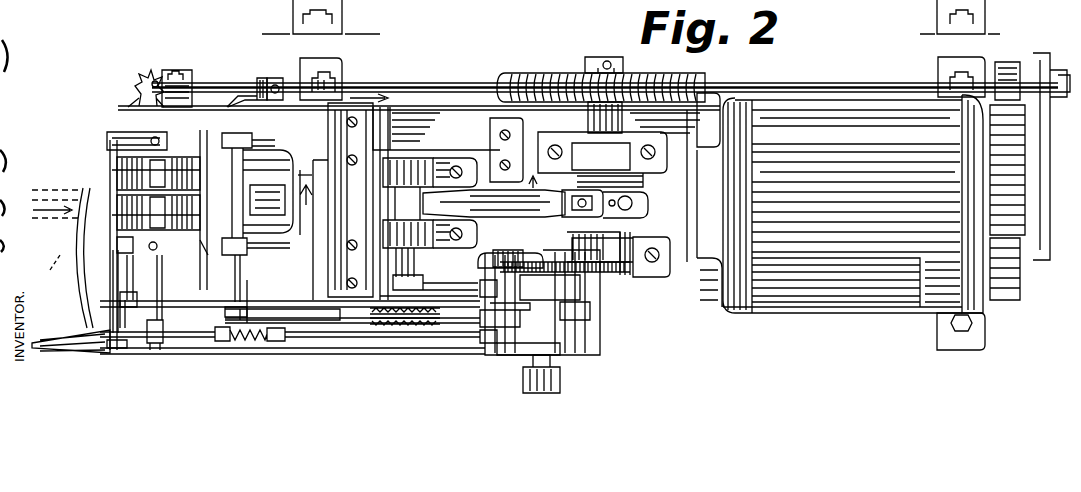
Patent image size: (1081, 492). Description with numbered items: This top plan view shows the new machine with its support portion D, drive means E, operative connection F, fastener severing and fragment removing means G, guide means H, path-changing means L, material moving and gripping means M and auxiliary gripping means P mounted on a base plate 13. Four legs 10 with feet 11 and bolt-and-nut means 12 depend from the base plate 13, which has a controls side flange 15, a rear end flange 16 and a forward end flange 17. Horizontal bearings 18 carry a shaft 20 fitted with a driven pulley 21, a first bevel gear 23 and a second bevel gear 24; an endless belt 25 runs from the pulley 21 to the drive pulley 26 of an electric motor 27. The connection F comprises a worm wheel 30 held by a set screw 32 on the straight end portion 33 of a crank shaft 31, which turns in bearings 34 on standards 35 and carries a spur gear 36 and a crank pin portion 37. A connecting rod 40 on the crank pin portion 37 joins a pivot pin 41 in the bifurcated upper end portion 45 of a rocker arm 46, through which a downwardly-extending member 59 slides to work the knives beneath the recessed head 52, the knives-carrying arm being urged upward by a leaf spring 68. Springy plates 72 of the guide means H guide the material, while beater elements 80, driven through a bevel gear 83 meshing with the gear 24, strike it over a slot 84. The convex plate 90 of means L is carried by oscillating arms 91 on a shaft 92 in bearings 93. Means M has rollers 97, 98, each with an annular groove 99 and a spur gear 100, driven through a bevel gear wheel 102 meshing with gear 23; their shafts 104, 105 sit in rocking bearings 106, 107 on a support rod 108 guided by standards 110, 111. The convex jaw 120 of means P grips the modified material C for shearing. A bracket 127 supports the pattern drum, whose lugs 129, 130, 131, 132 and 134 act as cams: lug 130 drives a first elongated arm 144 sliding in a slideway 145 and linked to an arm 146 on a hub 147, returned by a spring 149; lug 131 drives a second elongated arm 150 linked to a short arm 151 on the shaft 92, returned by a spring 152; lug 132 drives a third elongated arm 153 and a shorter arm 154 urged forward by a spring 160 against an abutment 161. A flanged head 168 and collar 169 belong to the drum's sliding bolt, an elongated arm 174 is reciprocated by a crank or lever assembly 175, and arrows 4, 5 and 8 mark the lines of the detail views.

The arrow indicating direction 4 is at (538, 184).
The arrow indicating direction 5 is at (297, 202).
The arrow indicating direction 8 is at (376, 104).
The legs 10 is at (340, 72).
The feet 11 is at (348, 30).
The carrying means 12 is at (303, 18).
The base plate 13 is at (428, 110).
The controls side flange 15 is at (106, 216).
The rear end flange 16 is at (1027, 292).
The forward end flange 17 is at (118, 142).
The horizontal bearings 18 is at (176, 70).
The shaft 20 is at (815, 78).
The driven pulley 21 is at (975, 118).
The first bevel gear 23 is at (148, 75).
The second bevel gear 24 is at (287, 78).
The endless belt 25 is at (1005, 125).
The drive pulley 26 is at (1000, 160).
The electric motor 27 is at (840, 313).
The worm wheel 30 is at (524, 73).
The crank shaft 31 is at (615, 58).
The set screw 32 is at (585, 65).
The straight end portion 33 is at (597, 57).
The bearings 34 is at (585, 145).
The standards 35 is at (670, 270).
The spur gear 36 is at (615, 300).
The crank pin portion 37 is at (692, 150).
The connecting rod 40 is at (650, 200).
The pivot pin 41 is at (580, 222).
The bifurcated upper end portion 45 is at (422, 172).
The rocker arm 46 is at (480, 190).
The recessed head 52 is at (332, 205).
The downwardly-extending member 59 is at (490, 212).
The means to urge arm upwardly 68 is at (490, 145).
The plate 72 is at (362, 112).
The beater elements 80 is at (288, 218).
The bevel gear 83 is at (255, 76).
The slot 84 is at (285, 158).
The convex plate 90 is at (210, 276).
The oscillating arms 91 is at (248, 133).
The shaft 92 is at (245, 270).
The bearings 93 is at (258, 140).
The roller 97 is at (115, 222).
The roller 98 is at (200, 232).
The annular groove 99 is at (125, 185).
The spur gear 100 is at (128, 150).
The bevel gear wheel 102 is at (138, 95).
The shaft 104 is at (120, 175).
The shaft 105 is at (120, 165).
The bearing 106 is at (115, 254).
The bearing 107 is at (120, 158).
The support rod 108 is at (160, 266).
The standard 110 is at (113, 262).
The standard 111 is at (120, 150).
The jaw 120 is at (84, 200).
The bracket 127 is at (565, 389).
The lug 129 is at (590, 320).
The lug 130 is at (520, 280).
The lug 131 is at (576, 356).
The lug 132 is at (495, 357).
The pin 134 is at (596, 345).
The first elongated arm 144 is at (300, 300).
The slideway 145 is at (470, 305).
The upwardly-extending arm 146 is at (118, 305).
The hub 147 is at (290, 314).
The retraction spiral spring 149 is at (480, 280).
The second elongated arm 150 is at (345, 335).
The short arm 151 is at (258, 268).
The retraction coil spring 152 is at (400, 335).
The third elongated arm 153 is at (370, 330).
The shorter arm 154 is at (200, 355).
The expansion spiral spring 160 is at (262, 345).
The abutment 161 is at (225, 345).
The flanged head 168 is at (512, 355).
The collar 169 is at (548, 330).
The elongated arm 174 is at (150, 352).
The crank or lever assembly 175 is at (60, 345).
The modified material C is at (35, 237).
The support portion D is at (712, 310).
The drive means E is at (118, 290).
The operative connection F is at (645, 71).
The separable fastener elements severing and fragment removing means G is at (384, 180).
The guide means H is at (272, 164).
The path-changing means L is at (223, 152).
The modified material moving and gripping means M is at (131, 144).
The auxiliary modified material gripping means P is at (38, 202).